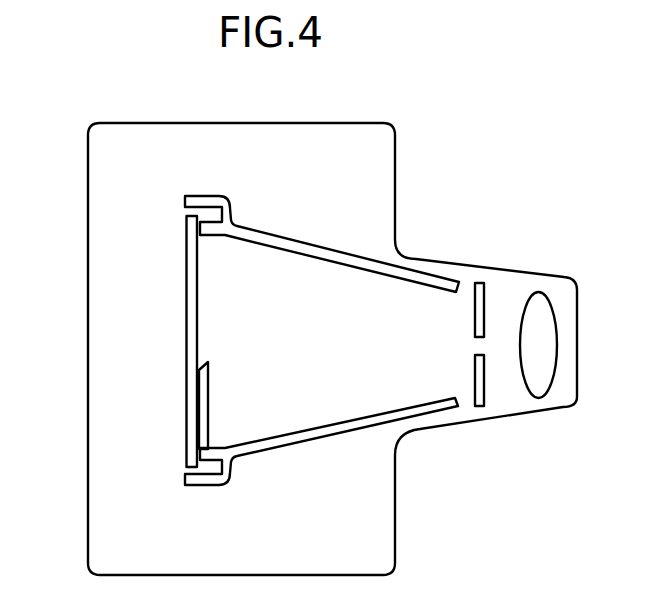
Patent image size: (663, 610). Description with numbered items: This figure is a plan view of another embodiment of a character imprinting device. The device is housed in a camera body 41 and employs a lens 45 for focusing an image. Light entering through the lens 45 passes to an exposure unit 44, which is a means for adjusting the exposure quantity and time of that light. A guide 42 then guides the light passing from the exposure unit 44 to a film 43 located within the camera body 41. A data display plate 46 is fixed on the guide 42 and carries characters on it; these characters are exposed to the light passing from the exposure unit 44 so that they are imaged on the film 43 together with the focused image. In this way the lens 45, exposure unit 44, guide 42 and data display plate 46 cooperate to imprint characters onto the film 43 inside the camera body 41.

The camera body 41 is at (97, 221).
The guide 42 is at (305, 241).
The film 43 is at (186, 331).
The exposure unit 44 is at (486, 288).
The lens 45 is at (558, 346).
The data display plate 46 is at (208, 398).